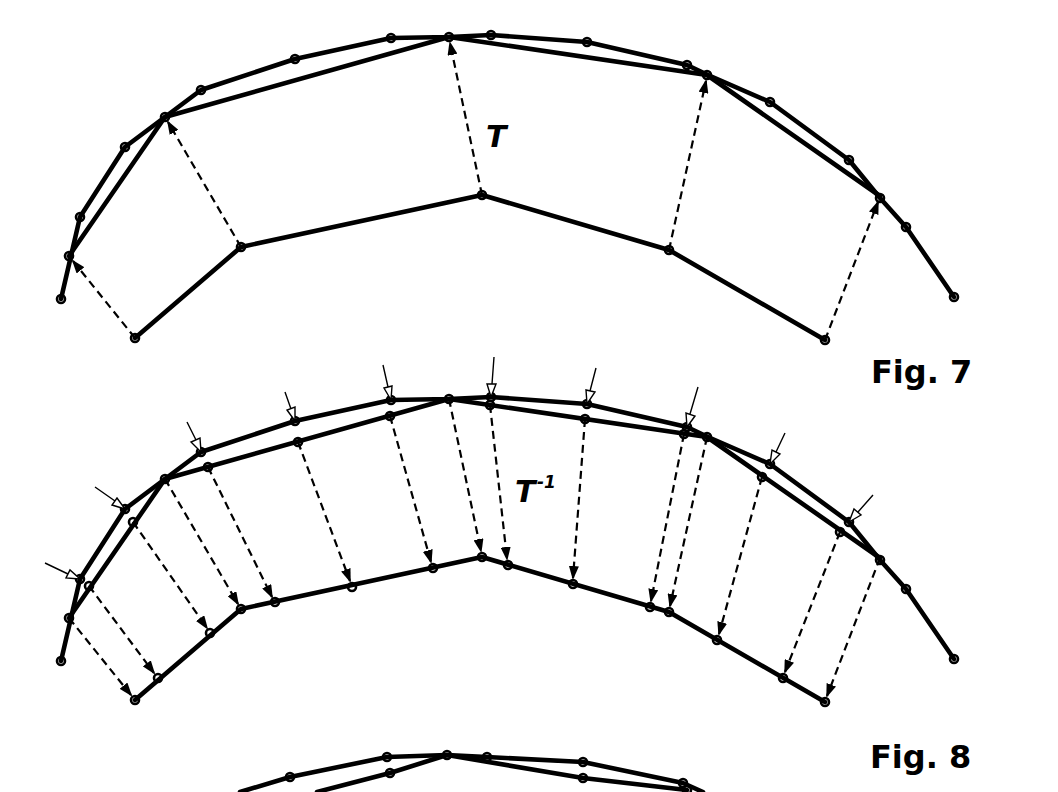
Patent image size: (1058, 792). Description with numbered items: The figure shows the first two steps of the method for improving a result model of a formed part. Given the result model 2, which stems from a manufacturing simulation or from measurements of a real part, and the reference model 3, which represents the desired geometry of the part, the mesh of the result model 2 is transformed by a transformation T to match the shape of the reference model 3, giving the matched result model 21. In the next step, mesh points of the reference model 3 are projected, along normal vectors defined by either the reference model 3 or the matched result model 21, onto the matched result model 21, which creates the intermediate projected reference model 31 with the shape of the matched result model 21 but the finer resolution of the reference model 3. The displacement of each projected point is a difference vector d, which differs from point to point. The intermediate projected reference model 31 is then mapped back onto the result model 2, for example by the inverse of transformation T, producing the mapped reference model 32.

In FIG. 7, the result model 2 is at (363, 227).
In FIG. 8, the result model 2 is at (315, 600).
In FIG. 7, the reference model 3 is at (247, 73).
In FIG. 8, the reference model 3 is at (239, 438).
In FIG. 7, the matched result model 21 is at (307, 87).
In FIG. 8, the matched result model 21 is at (273, 453).
In FIG. 8, the intermediate projected reference model 31 is at (307, 452).
In FIG. 8, the mapped reference model 32 is at (360, 594).
In FIG. 8, the difference vector d is at (286, 393).